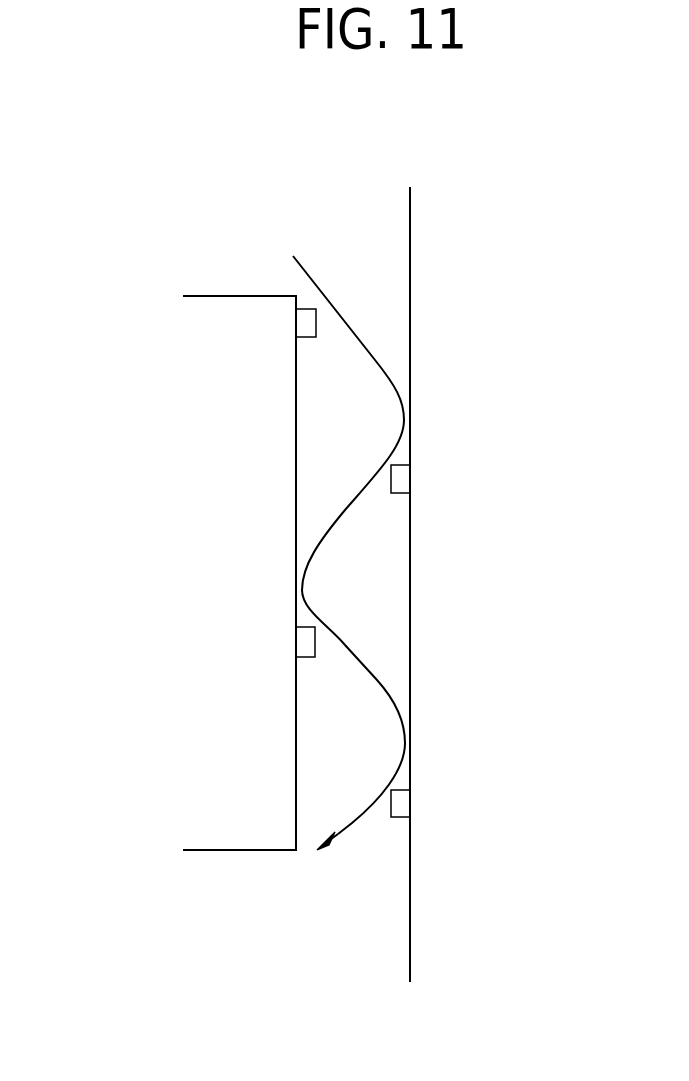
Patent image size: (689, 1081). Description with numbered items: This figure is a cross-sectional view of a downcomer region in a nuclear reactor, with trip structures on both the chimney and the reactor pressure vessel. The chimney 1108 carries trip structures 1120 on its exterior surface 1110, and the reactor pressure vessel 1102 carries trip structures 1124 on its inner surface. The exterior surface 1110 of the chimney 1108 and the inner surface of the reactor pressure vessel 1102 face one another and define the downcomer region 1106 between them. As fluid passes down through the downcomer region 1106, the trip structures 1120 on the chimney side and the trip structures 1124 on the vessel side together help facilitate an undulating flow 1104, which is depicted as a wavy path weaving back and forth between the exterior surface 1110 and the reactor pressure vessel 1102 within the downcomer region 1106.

The reactor pressure vessel 1102 is at (410, 265).
The undulating flow 1104 is at (387, 372).
The downcomer region 1106 is at (391, 592).
The chimney 1108 is at (175, 360).
The exterior surface 1110 is at (296, 767).
The trip structures 1120 is at (305, 322).
The trip structures 1124 is at (403, 478).